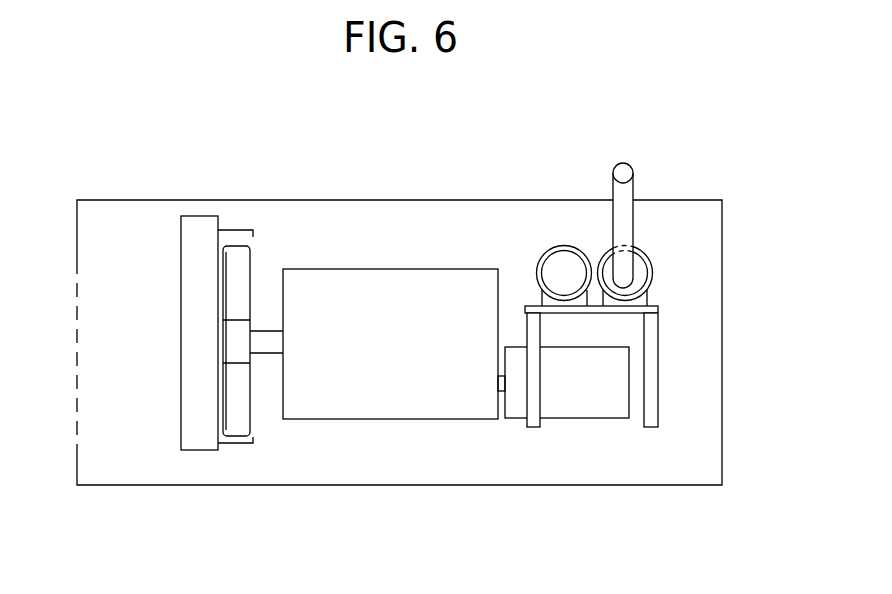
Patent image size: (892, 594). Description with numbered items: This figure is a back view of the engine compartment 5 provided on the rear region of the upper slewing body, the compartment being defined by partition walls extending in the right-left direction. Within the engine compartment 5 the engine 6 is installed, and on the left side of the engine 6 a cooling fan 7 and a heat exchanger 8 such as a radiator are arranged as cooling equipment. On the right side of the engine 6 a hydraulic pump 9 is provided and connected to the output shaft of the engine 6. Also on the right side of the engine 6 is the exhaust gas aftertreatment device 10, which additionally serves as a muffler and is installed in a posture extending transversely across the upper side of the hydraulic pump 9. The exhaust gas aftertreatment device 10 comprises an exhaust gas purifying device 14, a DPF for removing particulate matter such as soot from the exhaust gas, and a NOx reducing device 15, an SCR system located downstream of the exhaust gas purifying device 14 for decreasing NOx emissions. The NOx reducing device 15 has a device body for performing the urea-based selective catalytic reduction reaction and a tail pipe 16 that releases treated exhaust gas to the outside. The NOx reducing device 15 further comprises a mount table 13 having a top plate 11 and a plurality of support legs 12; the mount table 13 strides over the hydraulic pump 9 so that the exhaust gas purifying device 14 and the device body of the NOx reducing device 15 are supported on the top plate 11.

The engine compartment 5 is at (362, 215).
The engine 6 is at (407, 419).
The cooling fan 7 is at (240, 433).
The heat exchanger 8 is at (181, 397).
The hydraulic pump 9 is at (563, 418).
The exhaust gas aftertreatment device 10 is at (588, 128).
The top plate 11 is at (658, 307).
The support legs 12 is at (525, 398).
The mount table 13 is at (663, 350).
The exhaust gas purifying device 14 is at (555, 247).
The NOx reducing device 15 is at (607, 250).
The tail pipe 16 is at (630, 165).